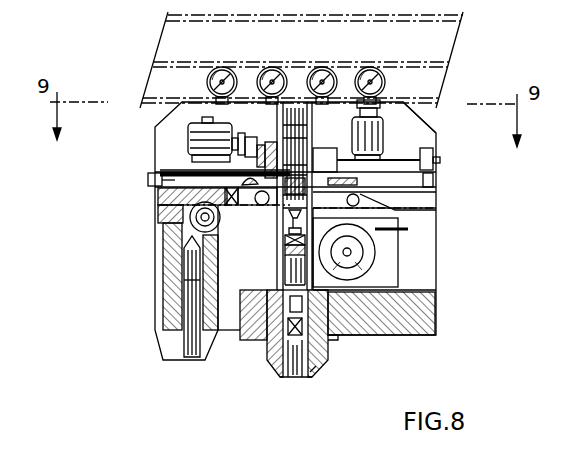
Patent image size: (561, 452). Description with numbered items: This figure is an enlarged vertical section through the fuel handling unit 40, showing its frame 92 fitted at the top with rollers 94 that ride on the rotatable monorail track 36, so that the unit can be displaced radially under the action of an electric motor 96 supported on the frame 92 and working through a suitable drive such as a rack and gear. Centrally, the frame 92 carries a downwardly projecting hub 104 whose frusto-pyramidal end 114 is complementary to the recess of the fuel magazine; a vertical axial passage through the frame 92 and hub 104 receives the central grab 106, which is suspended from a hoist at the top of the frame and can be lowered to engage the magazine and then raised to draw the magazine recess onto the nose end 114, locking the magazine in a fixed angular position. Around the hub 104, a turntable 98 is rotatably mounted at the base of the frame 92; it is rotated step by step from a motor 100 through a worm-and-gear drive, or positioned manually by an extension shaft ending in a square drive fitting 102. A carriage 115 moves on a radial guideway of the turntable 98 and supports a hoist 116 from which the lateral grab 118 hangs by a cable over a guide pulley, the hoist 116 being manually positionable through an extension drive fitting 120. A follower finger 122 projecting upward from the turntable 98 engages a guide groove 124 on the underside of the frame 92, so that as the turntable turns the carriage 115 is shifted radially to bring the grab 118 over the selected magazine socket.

The rotatable monorail track 36 is at (433, 53).
The rollers 94 is at (272, 67).
The fuel handling unit 40 is at (160, 113).
The frame 92 is at (424, 130).
The motor 100 is at (190, 139).
The guide groove 124 is at (158, 170).
The follower finger 122 is at (158, 178).
The grab 106 is at (266, 349).
The hub 104 is at (330, 340).
The frusto-pyramidal end 114 is at (312, 370).
The lateral grab 118 is at (182, 253).
The carriage 115 is at (388, 247).
The hoist 116 is at (360, 258).
The extension drive fitting 120 is at (408, 228).
The turntable 98 is at (436, 303).
The electric motor 96 is at (377, 128).
The square drive fitting 102 is at (440, 160).